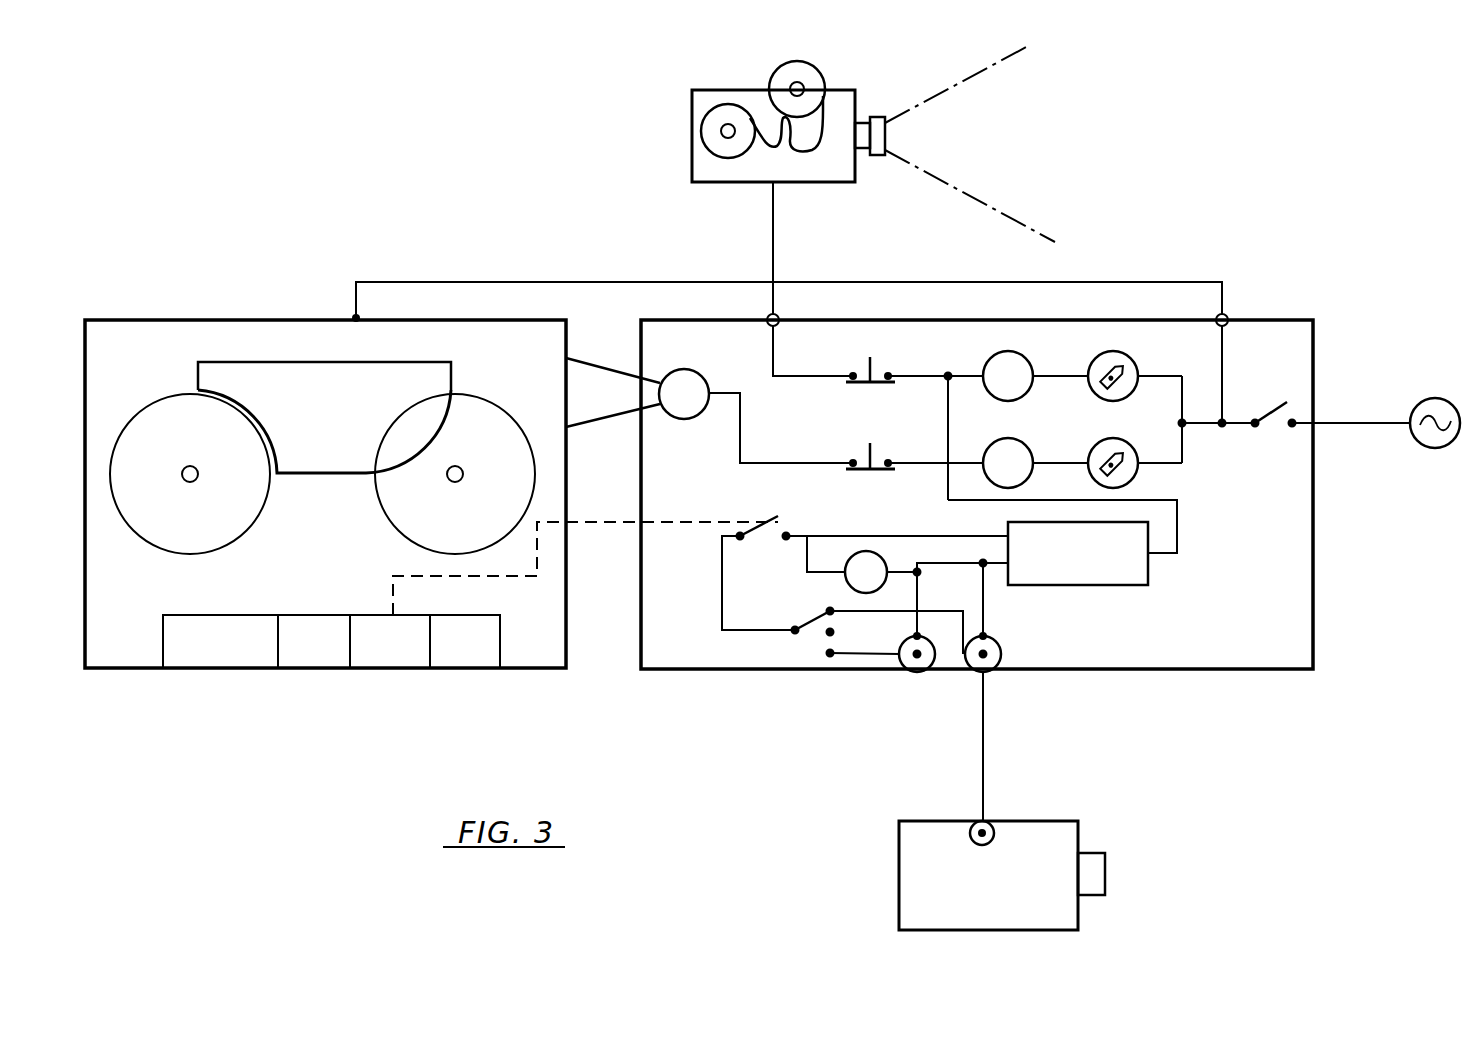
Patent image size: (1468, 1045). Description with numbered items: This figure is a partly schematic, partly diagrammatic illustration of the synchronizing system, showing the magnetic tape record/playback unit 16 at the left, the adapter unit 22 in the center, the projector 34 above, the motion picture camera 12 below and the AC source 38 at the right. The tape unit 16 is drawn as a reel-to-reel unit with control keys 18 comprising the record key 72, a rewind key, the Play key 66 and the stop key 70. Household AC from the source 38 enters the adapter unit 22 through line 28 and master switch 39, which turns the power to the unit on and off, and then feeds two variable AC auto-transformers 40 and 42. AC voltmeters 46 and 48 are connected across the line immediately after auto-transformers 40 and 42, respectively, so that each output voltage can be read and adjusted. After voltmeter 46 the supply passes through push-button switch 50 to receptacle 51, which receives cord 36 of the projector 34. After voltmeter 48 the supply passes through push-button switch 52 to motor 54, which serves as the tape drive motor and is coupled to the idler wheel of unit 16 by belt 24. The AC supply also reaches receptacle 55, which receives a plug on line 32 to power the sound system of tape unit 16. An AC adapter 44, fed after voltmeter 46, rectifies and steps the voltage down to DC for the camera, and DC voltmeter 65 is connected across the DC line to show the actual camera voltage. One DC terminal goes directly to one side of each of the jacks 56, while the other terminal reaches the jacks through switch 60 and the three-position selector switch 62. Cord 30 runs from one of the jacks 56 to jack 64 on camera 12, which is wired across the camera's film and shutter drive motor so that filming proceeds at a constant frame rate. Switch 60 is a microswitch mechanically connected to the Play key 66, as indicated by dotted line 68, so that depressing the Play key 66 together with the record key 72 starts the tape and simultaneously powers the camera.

The motion picture camera 12 is at (899, 890).
The magnetic tape record/playback unit 16 is at (263, 318).
The control keys 18 is at (316, 676).
The adapter unit 22 is at (1192, 669).
The belt 24 is at (612, 366).
The line 28 is at (1371, 425).
The cord 30 is at (984, 742).
The line 32 is at (560, 280).
The projector 34 is at (692, 113).
The cord 36 is at (773, 236).
The AC source 38 is at (1430, 398).
The master switch 39 is at (1272, 424).
The variable AC auto-transformer 40 is at (1110, 352).
The variable AC auto-transformer 42 is at (1113, 438).
The AC adapter 44 is at (1085, 586).
The AC voltmeter 46 is at (1000, 353).
The AC voltmeter 48 is at (1008, 438).
The switch 50 is at (860, 364).
The receptacle 51 is at (767, 315).
The switch 52 is at (860, 452).
The motor 54 is at (700, 419).
The receptacle 55 is at (1227, 315).
The jacks 56 is at (962, 664).
The switch 60 is at (785, 520).
The switch 62 is at (812, 642).
The jack 64 is at (970, 826).
The DC voltmeter 65 is at (878, 551).
The Play key 66 is at (402, 670).
The dotted line 68 is at (598, 524).
The stop key 70 is at (470, 670).
The record key 72 is at (222, 670).